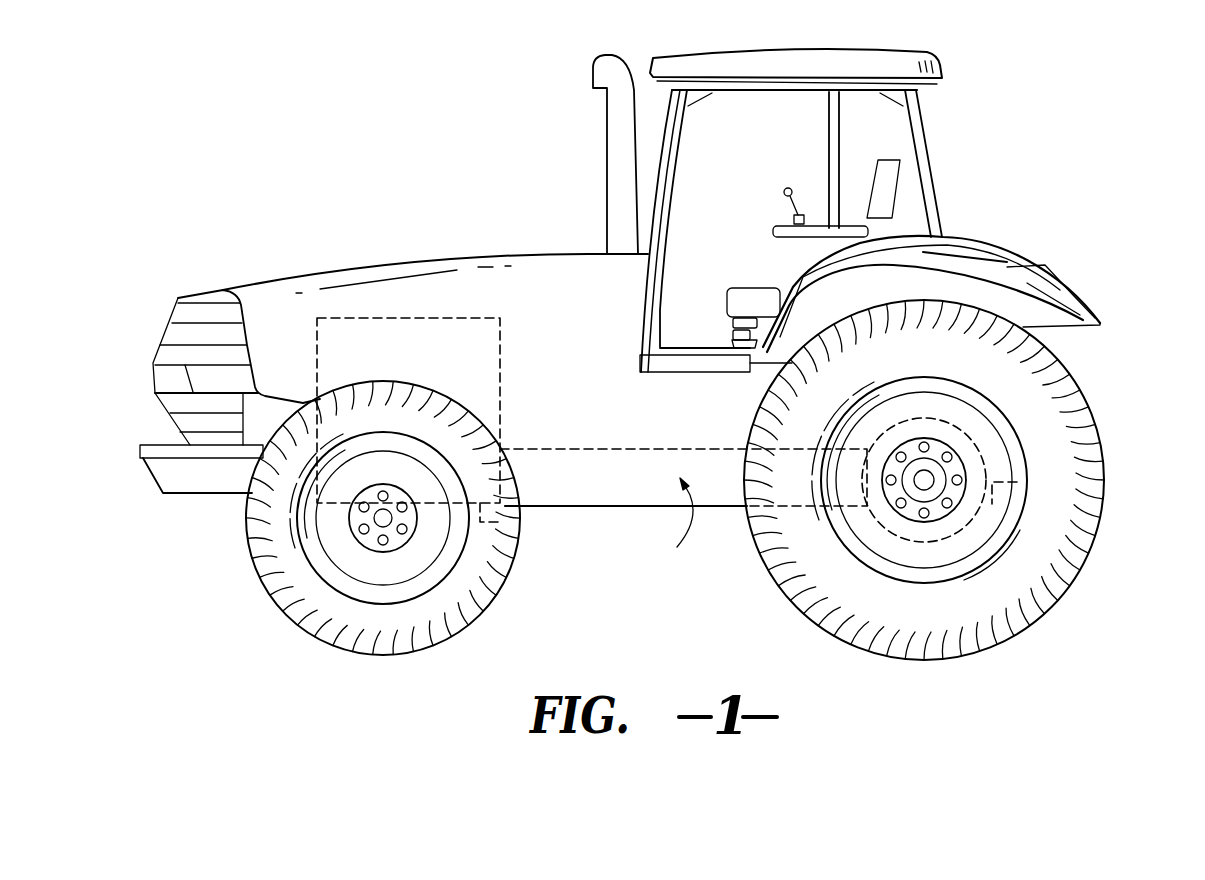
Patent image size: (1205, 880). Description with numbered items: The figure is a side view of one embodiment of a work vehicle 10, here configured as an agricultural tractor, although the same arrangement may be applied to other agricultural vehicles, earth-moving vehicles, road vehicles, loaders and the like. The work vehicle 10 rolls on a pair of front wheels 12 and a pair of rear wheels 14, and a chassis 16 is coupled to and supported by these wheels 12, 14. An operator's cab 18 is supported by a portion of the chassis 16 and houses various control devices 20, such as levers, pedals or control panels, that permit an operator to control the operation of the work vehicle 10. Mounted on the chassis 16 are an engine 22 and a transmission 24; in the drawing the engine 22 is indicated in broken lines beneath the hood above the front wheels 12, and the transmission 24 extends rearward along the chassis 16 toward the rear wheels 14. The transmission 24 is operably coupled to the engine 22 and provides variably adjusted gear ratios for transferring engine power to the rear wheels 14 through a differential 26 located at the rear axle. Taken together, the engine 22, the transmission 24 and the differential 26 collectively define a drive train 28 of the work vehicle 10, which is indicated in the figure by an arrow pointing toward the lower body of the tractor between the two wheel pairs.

The work vehicle 10 is at (321, 170).
The front wheels 12 is at (248, 535).
The rear wheels 14 is at (1107, 508).
The chassis 16 is at (613, 508).
The operator's cab 18 is at (932, 166).
The control devices 20 is at (788, 188).
The engine 22 is at (383, 317).
The transmission 24 is at (642, 447).
The differential 26 is at (992, 482).
The drive train 28 is at (669, 525).